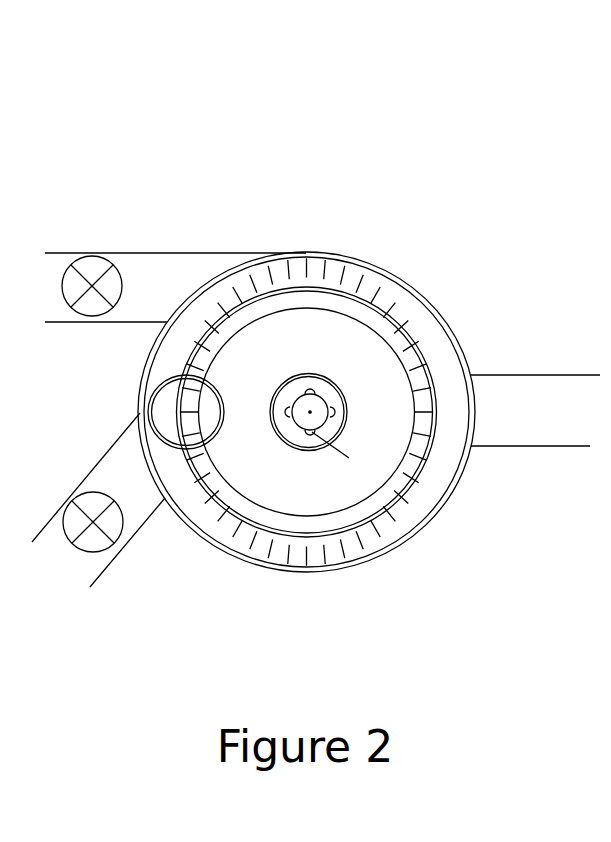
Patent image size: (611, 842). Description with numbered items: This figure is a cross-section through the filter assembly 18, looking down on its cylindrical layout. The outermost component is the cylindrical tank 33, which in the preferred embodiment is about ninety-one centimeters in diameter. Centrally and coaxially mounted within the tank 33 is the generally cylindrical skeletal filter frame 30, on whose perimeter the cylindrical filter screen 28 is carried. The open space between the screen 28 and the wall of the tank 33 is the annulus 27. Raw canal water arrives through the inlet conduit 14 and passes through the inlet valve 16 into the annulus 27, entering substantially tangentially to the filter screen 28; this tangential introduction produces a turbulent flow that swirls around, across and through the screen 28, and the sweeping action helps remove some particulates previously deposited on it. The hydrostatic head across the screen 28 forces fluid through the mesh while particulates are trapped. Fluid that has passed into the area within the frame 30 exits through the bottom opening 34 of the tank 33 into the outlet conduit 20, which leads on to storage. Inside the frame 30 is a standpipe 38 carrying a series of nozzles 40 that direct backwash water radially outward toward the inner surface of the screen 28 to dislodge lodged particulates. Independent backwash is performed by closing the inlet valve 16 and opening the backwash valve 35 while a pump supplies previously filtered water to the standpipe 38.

The filter assembly 18 is at (355, 426).
The inlet conduit 14 is at (128, 322).
The inlet valve 16 is at (92, 268).
The backwash valve 35 is at (93, 542).
The outlet conduit 20 is at (498, 408).
The annulus 27 is at (340, 547).
The cylindrical tank 33 is at (433, 520).
The skeletal filter frame 30 is at (342, 320).
The filter screen 28 is at (408, 330).
The bottom opening 34 is at (347, 396).
The standpipe 38 is at (310, 412).
The nozzles 40 is at (330, 414).